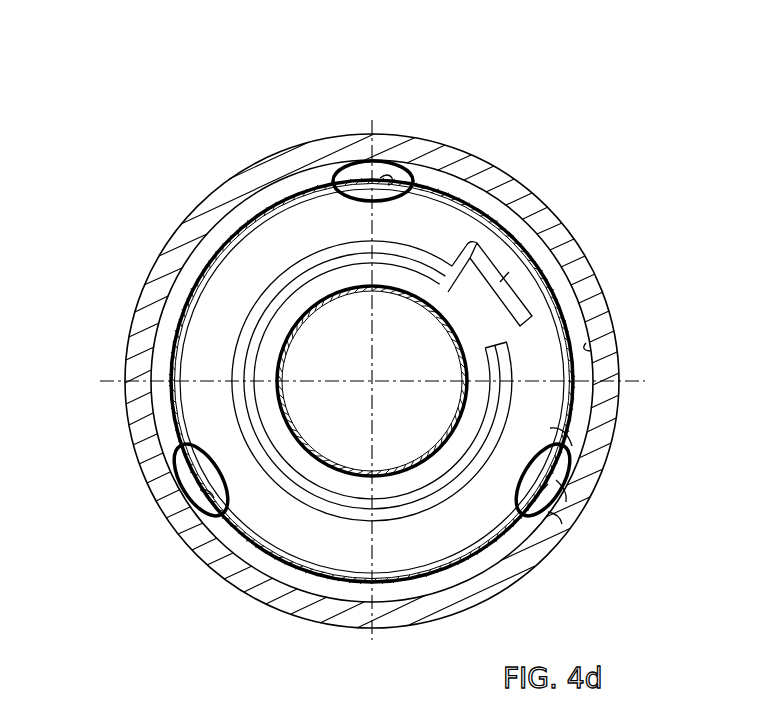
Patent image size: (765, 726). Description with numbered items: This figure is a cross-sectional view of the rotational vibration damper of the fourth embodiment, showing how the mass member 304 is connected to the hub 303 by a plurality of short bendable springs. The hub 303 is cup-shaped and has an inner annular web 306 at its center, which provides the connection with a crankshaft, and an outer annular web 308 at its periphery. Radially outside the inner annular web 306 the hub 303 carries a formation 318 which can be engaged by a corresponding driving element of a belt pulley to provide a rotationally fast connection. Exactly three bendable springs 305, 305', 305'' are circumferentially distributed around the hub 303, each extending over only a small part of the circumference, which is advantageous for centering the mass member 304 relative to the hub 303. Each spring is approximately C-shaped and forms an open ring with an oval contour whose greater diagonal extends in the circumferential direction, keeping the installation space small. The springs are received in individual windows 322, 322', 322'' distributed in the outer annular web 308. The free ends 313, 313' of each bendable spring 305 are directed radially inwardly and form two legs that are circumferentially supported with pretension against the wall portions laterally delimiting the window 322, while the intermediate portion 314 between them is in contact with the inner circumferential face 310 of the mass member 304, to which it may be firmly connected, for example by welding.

The hub 303 is at (270, 253).
The mass member 304 is at (568, 245).
The bendable spring 305 is at (607, 479).
The bendable spring 305' is at (367, 132).
The bendable spring 305'' is at (147, 479).
The inner annular web 306 is at (464, 352).
The outer annular web 308 is at (492, 222).
The inner circumferential face 310 is at (592, 351).
The free end 313 is at (616, 425).
The free end 313' is at (498, 504).
The intermediate portion 314 is at (568, 489).
The formation 318 is at (497, 311).
The window 322 is at (598, 534).
The window 322' is at (409, 133).
The window 322'' is at (173, 547).